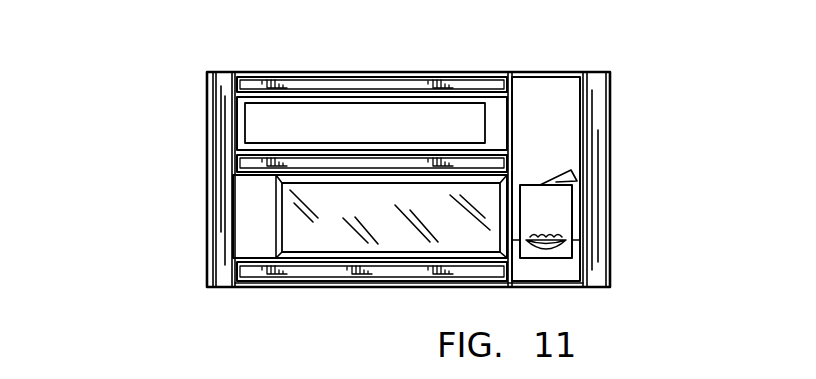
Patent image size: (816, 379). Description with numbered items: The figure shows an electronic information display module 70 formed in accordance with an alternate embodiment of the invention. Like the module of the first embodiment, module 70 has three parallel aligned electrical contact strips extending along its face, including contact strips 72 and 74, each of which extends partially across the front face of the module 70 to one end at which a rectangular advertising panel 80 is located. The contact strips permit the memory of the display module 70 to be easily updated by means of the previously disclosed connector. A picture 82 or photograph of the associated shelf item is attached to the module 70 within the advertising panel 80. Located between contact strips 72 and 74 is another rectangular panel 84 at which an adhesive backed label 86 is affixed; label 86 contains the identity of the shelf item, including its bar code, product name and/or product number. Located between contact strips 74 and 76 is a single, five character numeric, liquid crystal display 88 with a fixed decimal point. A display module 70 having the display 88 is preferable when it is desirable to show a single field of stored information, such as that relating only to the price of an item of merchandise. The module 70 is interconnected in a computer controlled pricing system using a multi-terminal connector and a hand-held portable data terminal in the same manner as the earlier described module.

The electronic information display module 70 is at (145, 200).
The electrical contact strip 72 is at (240, 87).
The electrical contact strip 74 is at (243, 165).
The contact strip 76 is at (243, 275).
The rectangular advertising panel 80 is at (575, 260).
The picture 82 is at (567, 200).
The sign panel 84 is at (242, 127).
The adhesive backed label 86 is at (262, 110).
The liquid crystal display 88 is at (320, 240).